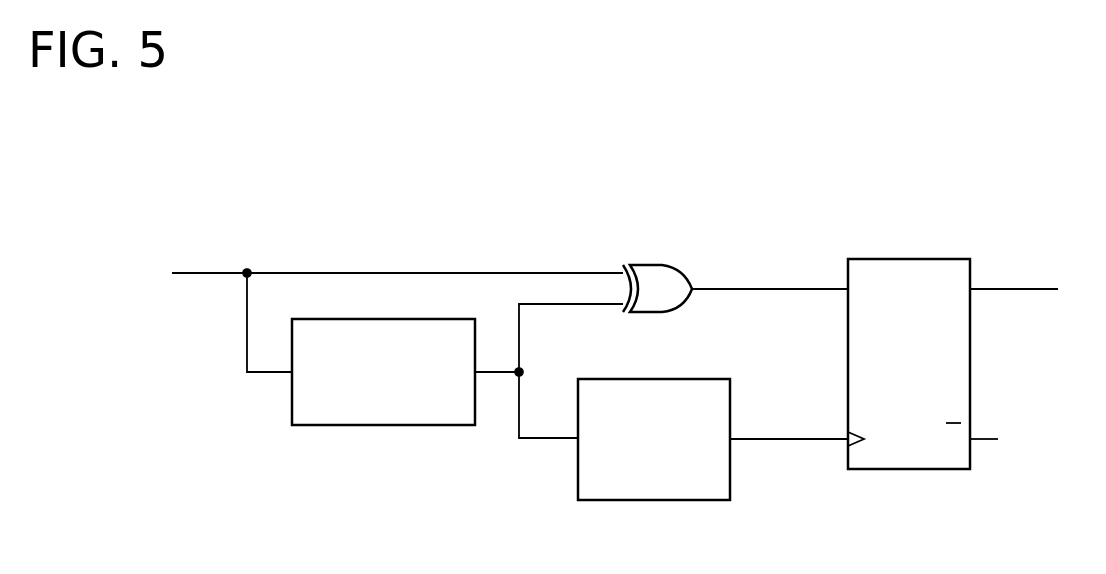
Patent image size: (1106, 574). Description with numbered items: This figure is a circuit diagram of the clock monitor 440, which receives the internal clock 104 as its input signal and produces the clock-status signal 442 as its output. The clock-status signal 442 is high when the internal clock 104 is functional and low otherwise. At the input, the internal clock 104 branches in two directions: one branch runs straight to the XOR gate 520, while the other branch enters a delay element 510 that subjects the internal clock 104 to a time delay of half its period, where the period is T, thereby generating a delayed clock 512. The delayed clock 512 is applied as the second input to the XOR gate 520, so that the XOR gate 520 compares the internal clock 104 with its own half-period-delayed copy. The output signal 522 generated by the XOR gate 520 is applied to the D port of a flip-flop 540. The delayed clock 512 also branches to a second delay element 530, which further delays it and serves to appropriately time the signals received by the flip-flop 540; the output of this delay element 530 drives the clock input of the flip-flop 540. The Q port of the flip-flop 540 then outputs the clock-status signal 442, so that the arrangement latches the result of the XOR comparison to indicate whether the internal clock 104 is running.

The clock monitor 440 is at (119, 138).
The internal clock 104 is at (210, 272).
The delay element 510 is at (357, 426).
The delayed clock 512 is at (519, 333).
The XOR gate 520 is at (657, 264).
The output signal 522 is at (742, 287).
The delay element 530 is at (640, 501).
The flip-flop 540 is at (921, 258).
The clock-status signal 442 is at (1018, 288).